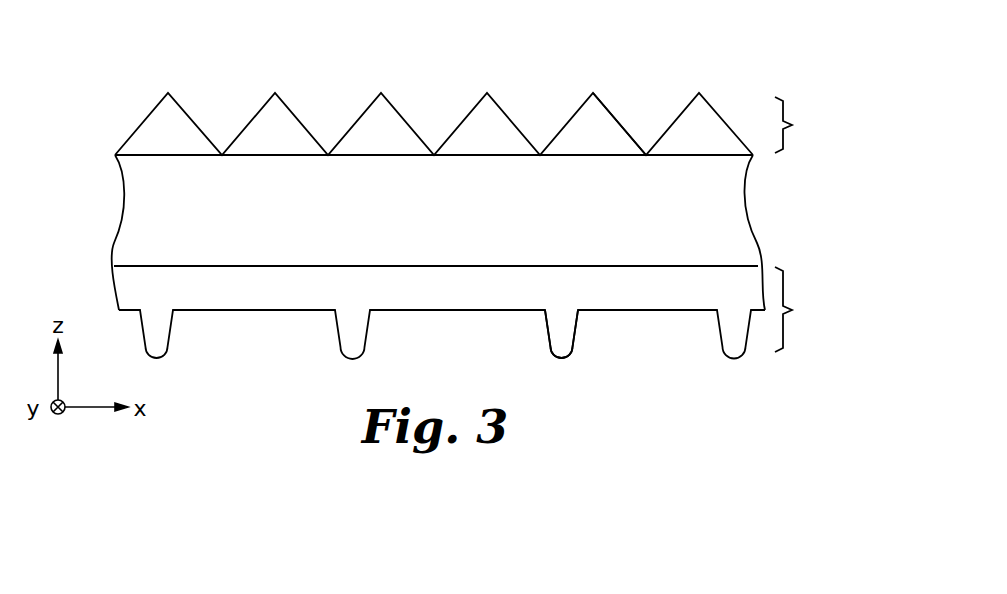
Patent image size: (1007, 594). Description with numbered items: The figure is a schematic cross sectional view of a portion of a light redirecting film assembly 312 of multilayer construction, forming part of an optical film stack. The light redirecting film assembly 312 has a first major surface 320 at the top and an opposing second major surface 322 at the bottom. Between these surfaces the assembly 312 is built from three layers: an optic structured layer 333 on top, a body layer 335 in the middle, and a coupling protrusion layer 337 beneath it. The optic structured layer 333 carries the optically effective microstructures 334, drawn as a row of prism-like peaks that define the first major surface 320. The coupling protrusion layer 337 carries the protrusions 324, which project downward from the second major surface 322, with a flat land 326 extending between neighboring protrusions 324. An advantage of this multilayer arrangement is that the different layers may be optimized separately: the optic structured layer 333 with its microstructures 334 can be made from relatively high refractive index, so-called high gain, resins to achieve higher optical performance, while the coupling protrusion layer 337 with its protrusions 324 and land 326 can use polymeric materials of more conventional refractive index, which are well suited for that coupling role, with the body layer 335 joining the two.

The light redirecting film assembly 312 is at (748, 68).
The first major surface of light redirecting film assembly 320 is at (146, 121).
The second major surface of light redirecting film assembly 322 is at (248, 311).
The protrusions 324 is at (575, 338).
The land 326 is at (454, 311).
The optic structured layer 333 is at (811, 125).
The optically effective microstructures 334 is at (615, 113).
The body layer 335 is at (723, 206).
The coupling protrusion layer 337 is at (483, 313).